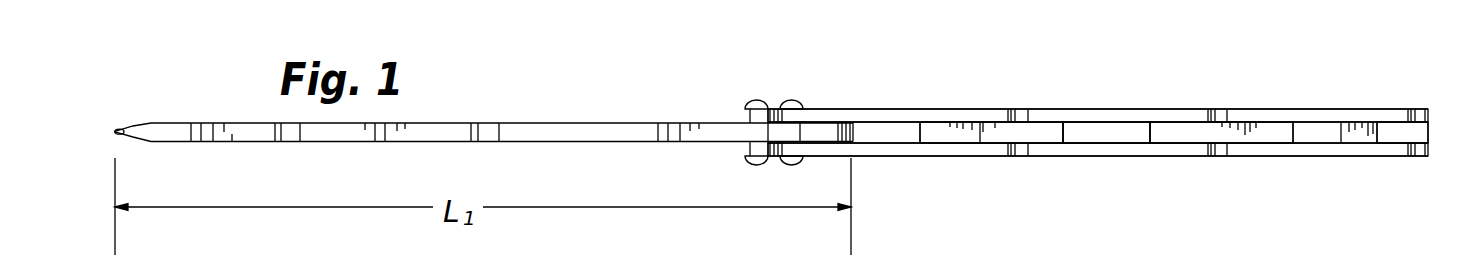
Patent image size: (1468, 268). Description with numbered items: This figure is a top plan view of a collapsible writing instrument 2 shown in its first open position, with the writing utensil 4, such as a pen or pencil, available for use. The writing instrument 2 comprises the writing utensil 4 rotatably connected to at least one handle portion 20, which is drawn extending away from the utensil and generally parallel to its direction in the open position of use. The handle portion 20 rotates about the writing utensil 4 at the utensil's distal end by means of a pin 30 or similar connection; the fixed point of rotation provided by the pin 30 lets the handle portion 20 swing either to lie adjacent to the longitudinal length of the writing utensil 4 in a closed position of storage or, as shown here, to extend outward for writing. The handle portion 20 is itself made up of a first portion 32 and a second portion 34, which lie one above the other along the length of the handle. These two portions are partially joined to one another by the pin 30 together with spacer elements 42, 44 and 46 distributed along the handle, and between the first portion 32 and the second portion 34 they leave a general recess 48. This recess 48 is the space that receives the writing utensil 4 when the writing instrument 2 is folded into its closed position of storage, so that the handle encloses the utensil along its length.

The writing instrument 2 is at (204, 79).
The writing utensil 4 is at (385, 143).
The handle portion 20 is at (977, 108).
The pin 30 is at (790, 98).
The first portion 32 is at (1305, 113).
The second portion 34 is at (1323, 147).
The spacer element 42 is at (1027, 132).
The spacer element 44 is at (1192, 132).
The spacer element 46 is at (1403, 133).
The recess 48 is at (1097, 132).